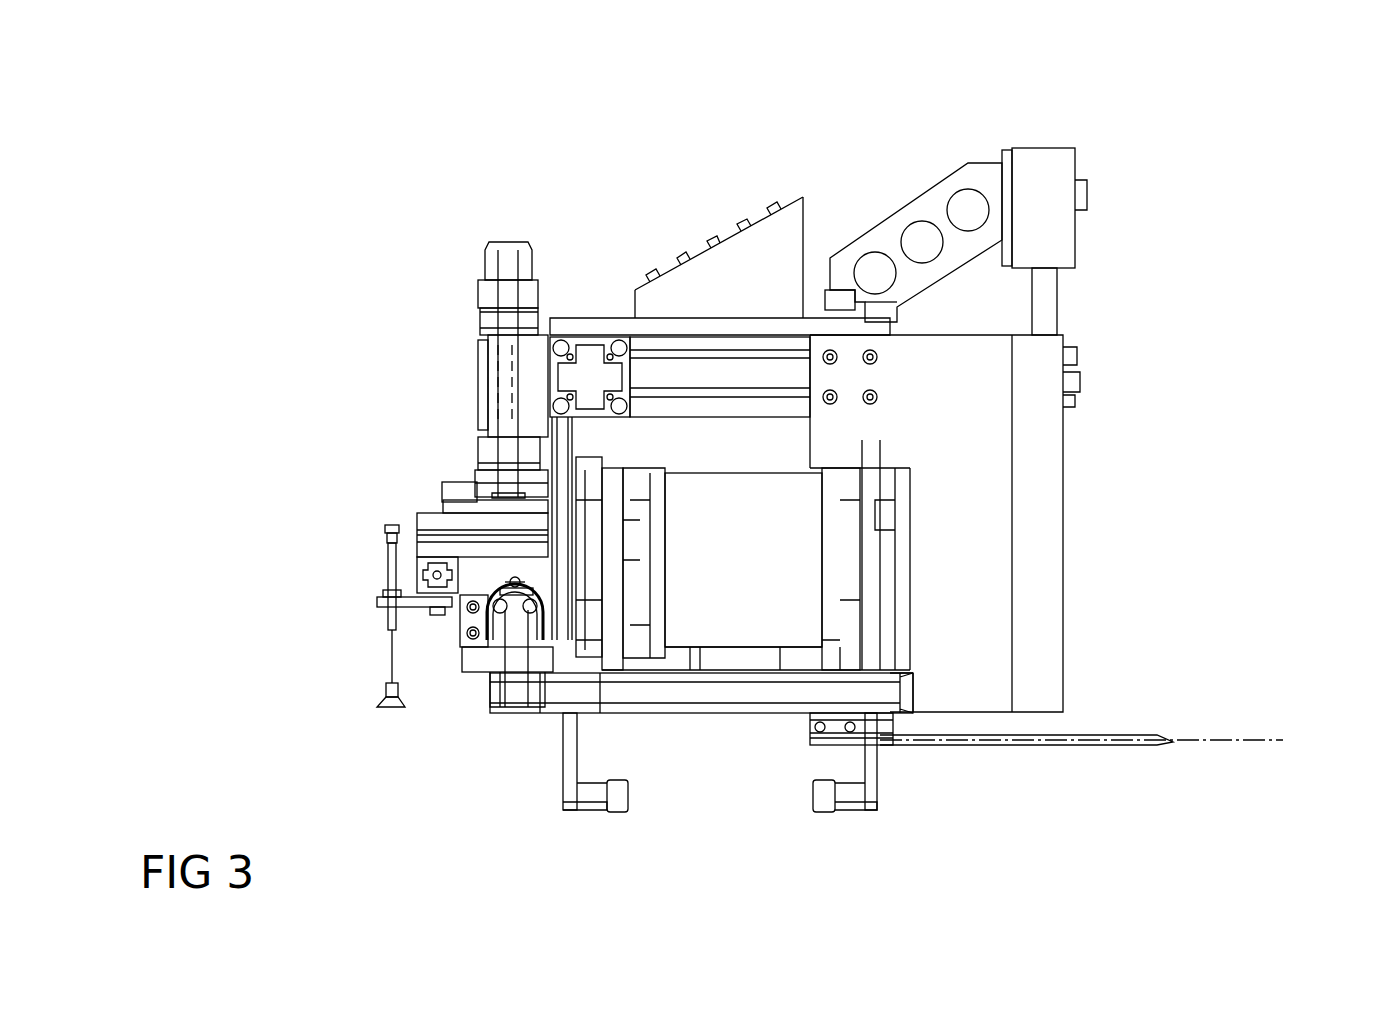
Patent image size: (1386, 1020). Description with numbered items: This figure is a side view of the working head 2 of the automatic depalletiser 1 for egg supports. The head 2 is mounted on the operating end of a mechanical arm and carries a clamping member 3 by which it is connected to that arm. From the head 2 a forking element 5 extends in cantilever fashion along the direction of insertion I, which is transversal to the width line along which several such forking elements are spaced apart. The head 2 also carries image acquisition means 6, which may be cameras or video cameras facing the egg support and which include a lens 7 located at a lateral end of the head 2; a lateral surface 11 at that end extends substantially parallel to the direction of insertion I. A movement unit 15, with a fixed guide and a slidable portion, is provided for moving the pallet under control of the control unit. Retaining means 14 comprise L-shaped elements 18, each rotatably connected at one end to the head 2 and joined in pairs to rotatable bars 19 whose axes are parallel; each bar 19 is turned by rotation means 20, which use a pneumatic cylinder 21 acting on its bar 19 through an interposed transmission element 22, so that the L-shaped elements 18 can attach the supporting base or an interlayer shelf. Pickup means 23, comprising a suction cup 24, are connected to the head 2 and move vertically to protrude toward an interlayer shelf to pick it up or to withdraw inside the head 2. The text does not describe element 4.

The depalletiser 1 is at (243, 201).
The working head 2 is at (1187, 448).
The clamping member 3 is at (710, 218).
The guide rail profile 4 is at (675, 344).
The forking element 5 is at (1146, 725).
The image acquisition means 6 is at (723, 628).
The lens 7 is at (743, 555).
The lateral surface 11 is at (976, 597).
The retaining means 14 is at (610, 827).
The movement unit 15 is at (1120, 206).
The L-shaped element 18 is at (595, 795).
The bar 19 is at (760, 690).
The rotation means 20 is at (522, 590).
The pneumatic cylinder 21 is at (492, 578).
The transmission element 22 is at (512, 710).
The pickup means 23 is at (356, 708).
The suction cup 24 is at (380, 707).
The direction of insertion I is at (1220, 748).